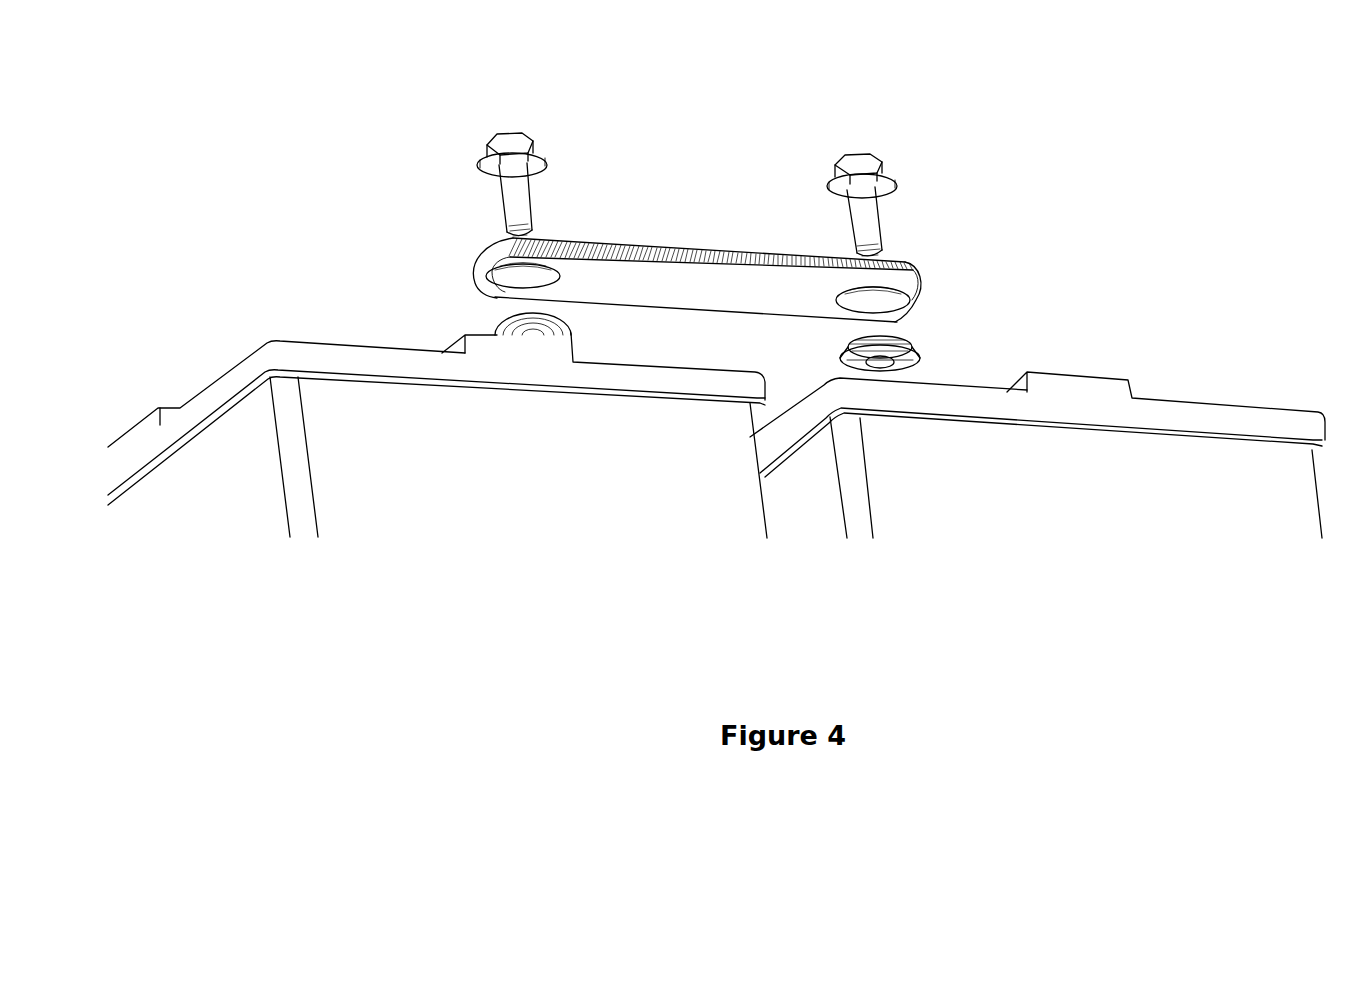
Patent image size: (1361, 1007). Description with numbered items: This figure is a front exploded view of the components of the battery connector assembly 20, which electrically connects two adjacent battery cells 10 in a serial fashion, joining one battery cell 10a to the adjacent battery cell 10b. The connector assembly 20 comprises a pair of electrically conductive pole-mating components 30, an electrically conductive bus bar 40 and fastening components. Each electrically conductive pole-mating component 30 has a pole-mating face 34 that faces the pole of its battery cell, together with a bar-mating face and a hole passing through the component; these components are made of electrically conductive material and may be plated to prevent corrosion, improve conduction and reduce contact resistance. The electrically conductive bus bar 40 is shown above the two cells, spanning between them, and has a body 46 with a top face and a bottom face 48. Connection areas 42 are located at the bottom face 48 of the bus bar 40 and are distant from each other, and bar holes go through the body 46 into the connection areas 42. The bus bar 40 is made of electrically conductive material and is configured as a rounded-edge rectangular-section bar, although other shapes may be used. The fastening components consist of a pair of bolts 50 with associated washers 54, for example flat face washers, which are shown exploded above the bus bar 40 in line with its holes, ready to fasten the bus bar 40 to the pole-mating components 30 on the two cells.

The battery cell 10 is at (716, 463).
The battery cell 10a is at (487, 498).
The adjacent battery cell 10b is at (1150, 502).
The battery connector assembly 20 is at (675, 313).
The electrically conductive pole-mating component 30 is at (910, 350).
The pole-mating face 34 is at (853, 367).
The electrically conductive bus bar 40 is at (697, 223).
The body 46 is at (697, 223).
The bottom face 48 is at (728, 290).
The connection area 42 is at (507, 283).
The bolt 50 is at (523, 213).
The washer 54 is at (497, 175).